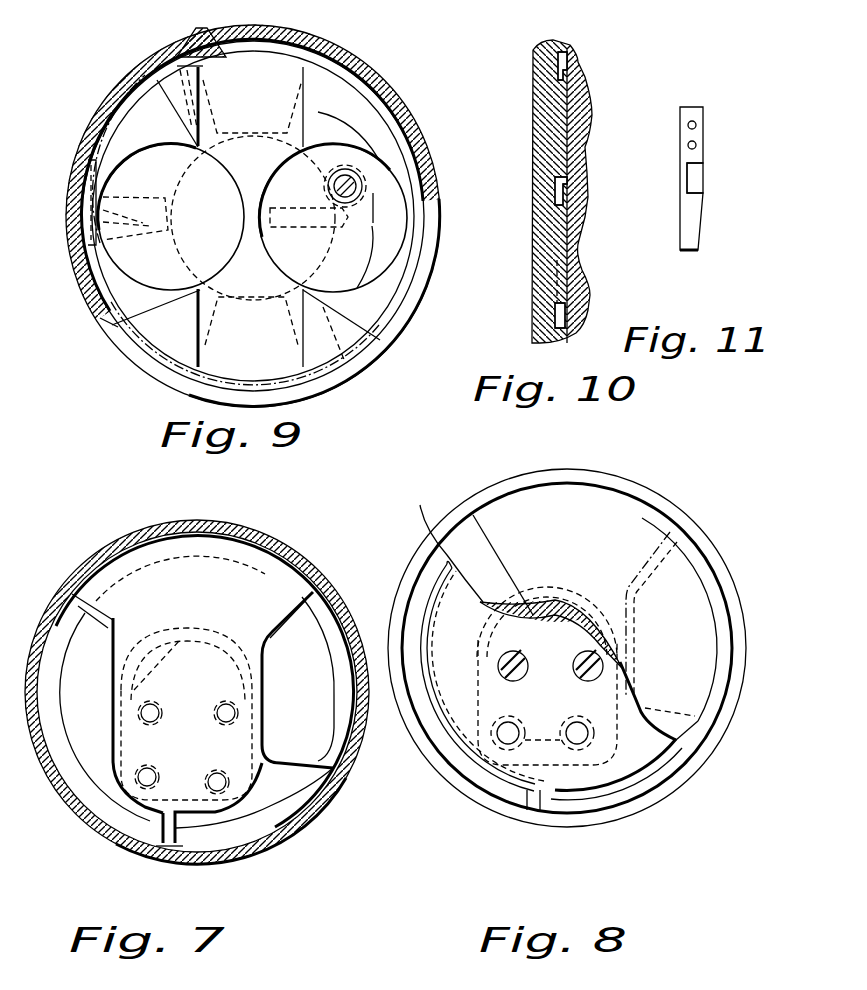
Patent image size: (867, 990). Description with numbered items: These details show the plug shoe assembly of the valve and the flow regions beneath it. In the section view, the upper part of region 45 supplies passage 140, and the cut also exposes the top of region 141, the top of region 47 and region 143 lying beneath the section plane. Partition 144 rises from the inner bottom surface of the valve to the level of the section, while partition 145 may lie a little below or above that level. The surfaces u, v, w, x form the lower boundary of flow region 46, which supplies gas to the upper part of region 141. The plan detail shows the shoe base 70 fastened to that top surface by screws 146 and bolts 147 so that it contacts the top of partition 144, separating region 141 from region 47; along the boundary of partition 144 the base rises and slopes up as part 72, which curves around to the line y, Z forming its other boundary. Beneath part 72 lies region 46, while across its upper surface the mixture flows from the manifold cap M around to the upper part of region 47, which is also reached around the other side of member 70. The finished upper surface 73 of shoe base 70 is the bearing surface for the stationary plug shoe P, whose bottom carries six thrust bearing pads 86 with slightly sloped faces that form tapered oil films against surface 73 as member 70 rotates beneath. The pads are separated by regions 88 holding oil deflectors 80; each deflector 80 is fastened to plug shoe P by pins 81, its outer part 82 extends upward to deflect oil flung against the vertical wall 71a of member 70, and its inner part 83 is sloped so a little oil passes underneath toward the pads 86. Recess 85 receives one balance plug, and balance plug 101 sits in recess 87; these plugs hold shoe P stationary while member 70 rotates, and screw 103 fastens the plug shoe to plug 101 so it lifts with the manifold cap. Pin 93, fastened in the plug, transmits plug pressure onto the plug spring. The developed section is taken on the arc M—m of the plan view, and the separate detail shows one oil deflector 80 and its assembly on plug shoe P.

In FIG. 7, the passage 45 is at (111, 717).
In FIG. 8, the passage 45 is at (445, 542).
In FIG. 8, the passage 46 is at (447, 560).
In FIG. 7, the region 47 is at (270, 831).
In FIG. 8, the region 47 is at (663, 757).
In FIG. 10, the shoe base 70 is at (587, 92).
In FIG. 8, the shoe base 70 is at (448, 585).
In FIG. 9, the vertical wall 71a is at (310, 52).
In FIG. 8, the vertical wall 71a is at (430, 598).
In FIG. 8, the sloping part of shoe base 72 is at (707, 629).
In FIG. 10, the upper surface 73 is at (573, 70).
In FIG. 8, the upper surface 73 is at (526, 676).
In FIG. 9, the oil deflector 80 is at (176, 62).
In FIG. 10, the oil deflector 80 is at (563, 205).
In FIG. 11, the oil deflector 80 is at (705, 118).
In FIG. 9, the pin 81 is at (205, 45).
In FIG. 9, the outer part of oil deflector 82 is at (185, 62).
In FIG. 10, the outer part of oil deflector 82 is at (565, 182).
In FIG. 11, the outer part of oil deflector 82 is at (696, 178).
In FIG. 9, the inner part of oil deflector 83 is at (115, 229).
In FIG. 10, the inner part of oil deflector 83 is at (563, 193).
In FIG. 11, the inner part of oil deflector 83 is at (700, 215).
In FIG. 9, the recess 85 is at (116, 272).
In FIG. 9, the thrust bearing pad 86 is at (150, 100).
In FIG. 10, the thrust bearing pad 86 is at (563, 113).
In FIG. 9, the recess 87 is at (383, 160).
In FIG. 9, the region between pads 88 is at (352, 368).
In FIG. 10, the region between pads 88 is at (560, 66).
In FIG. 9, the pin 93 is at (321, 201).
In FIG. 9, the balance plug 101 is at (400, 228).
In FIG. 9, the screw 103 is at (345, 186).
In FIG. 7, the passage 140 is at (180, 578).
In FIG. 7, the region 141 is at (298, 680).
In FIG. 8, the region 141 is at (682, 583).
In FIG. 7, the region 143 is at (186, 714).
In FIG. 7, the partition 144 is at (276, 757).
In FIG. 8, the partition 144 is at (660, 710).
In FIG. 7, the partition 145 is at (165, 830).
In FIG. 8, the screw 146 is at (523, 671).
In FIG. 8, the bolt 147 is at (522, 728).
In FIG. 9, the plug shoe P is at (113, 132).
In FIG. 10, the plug shoe P is at (533, 153).
In FIG. 9, the manifold cap M is at (345, 189).
In FIG. 9, the arc end point m is at (267, 321).
In FIG. 7, the boundary surface point u is at (92, 610).
In FIG. 7, the boundary surface point v is at (316, 604).
In FIG. 7, the boundary surface point w is at (280, 662).
In FIG. 7, the boundary surface point x is at (102, 692).
In FIG. 8, the boundary line point y is at (503, 559).
In FIG. 8, the boundary line point Z is at (537, 597).